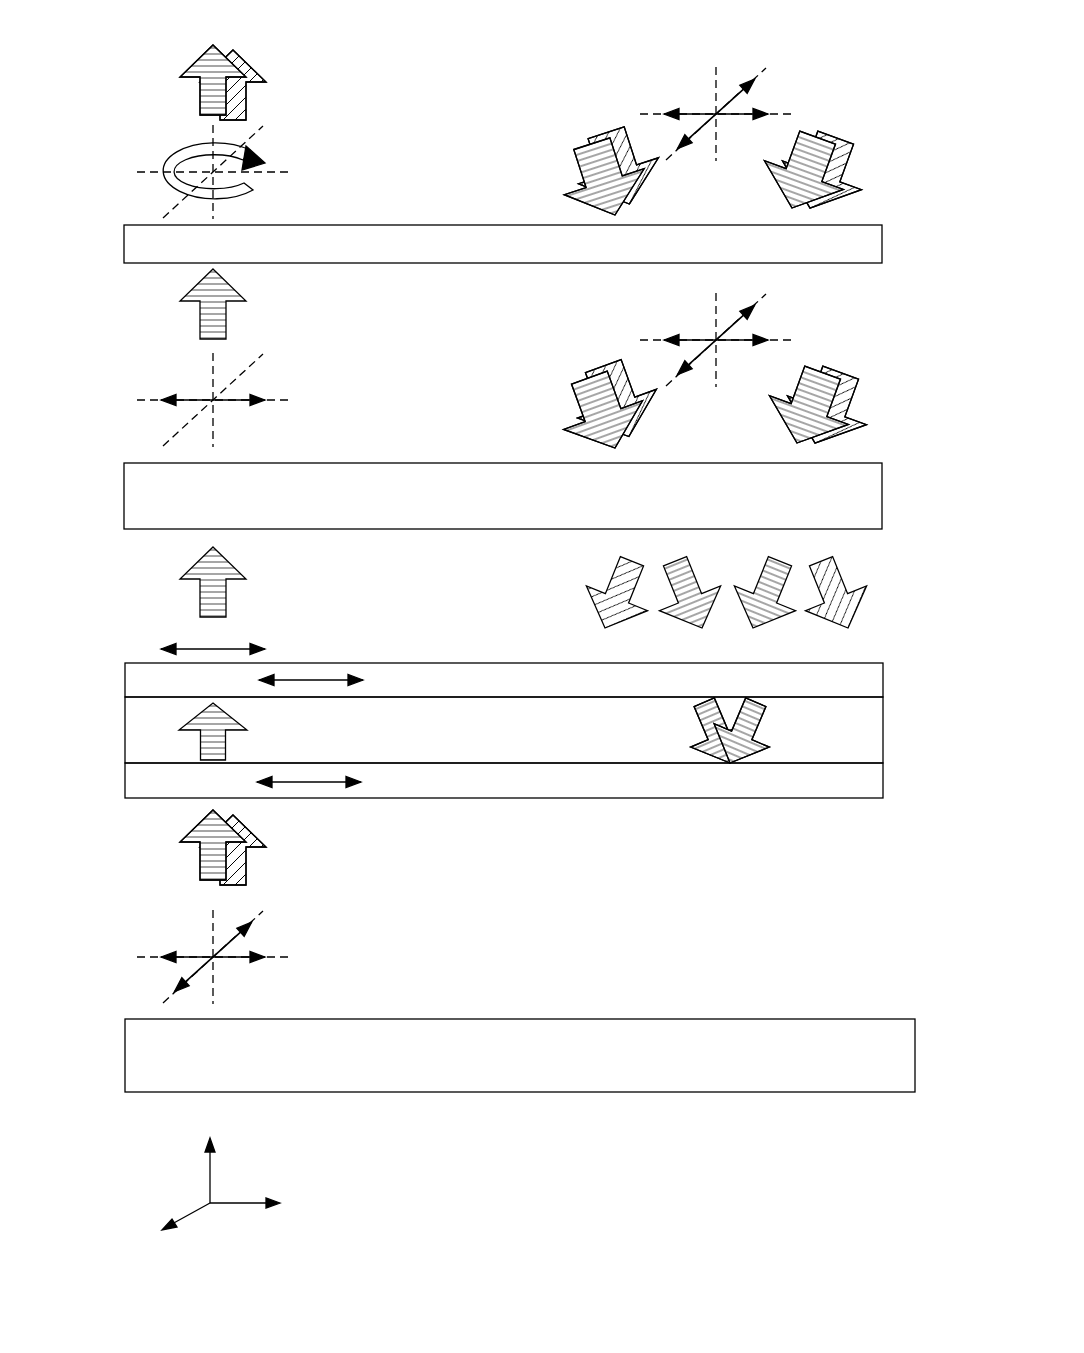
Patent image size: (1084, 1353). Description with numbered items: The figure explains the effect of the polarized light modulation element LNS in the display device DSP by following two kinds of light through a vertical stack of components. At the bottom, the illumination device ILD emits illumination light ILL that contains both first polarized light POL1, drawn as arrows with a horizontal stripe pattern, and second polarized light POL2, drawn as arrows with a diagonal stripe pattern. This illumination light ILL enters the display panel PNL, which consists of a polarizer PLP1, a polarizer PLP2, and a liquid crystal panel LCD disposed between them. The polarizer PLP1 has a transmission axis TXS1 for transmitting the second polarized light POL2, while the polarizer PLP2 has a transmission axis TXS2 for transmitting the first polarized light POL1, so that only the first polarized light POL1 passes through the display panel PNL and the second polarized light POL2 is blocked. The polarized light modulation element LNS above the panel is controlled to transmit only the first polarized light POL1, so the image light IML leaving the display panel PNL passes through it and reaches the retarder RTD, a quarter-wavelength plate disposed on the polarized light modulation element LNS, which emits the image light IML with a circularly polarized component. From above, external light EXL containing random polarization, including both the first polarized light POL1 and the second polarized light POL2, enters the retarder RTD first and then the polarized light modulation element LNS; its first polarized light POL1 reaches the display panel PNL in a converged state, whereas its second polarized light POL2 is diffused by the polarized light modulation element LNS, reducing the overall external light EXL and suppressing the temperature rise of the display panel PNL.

The display device DSP is at (413, 86).
The retarder RTD is at (542, 244).
The polarized light modulation element LNS is at (541, 496).
The image light IML is at (226, 321).
The external light EXL is at (582, 171).
The first polarized light POL1 is at (740, 111).
The second polarized light POL2 is at (697, 133).
The display panel PNL is at (504, 731).
The polarizer PLP2 is at (462, 680).
The liquid crystal panel LCD is at (467, 733).
The polarizer PLP1 is at (462, 780).
The transmission axis TXS2 is at (325, 680).
The transmission axis TXS1 is at (325, 784).
The illumination light ILL is at (270, 815).
The illumination device ILD is at (488, 1055).